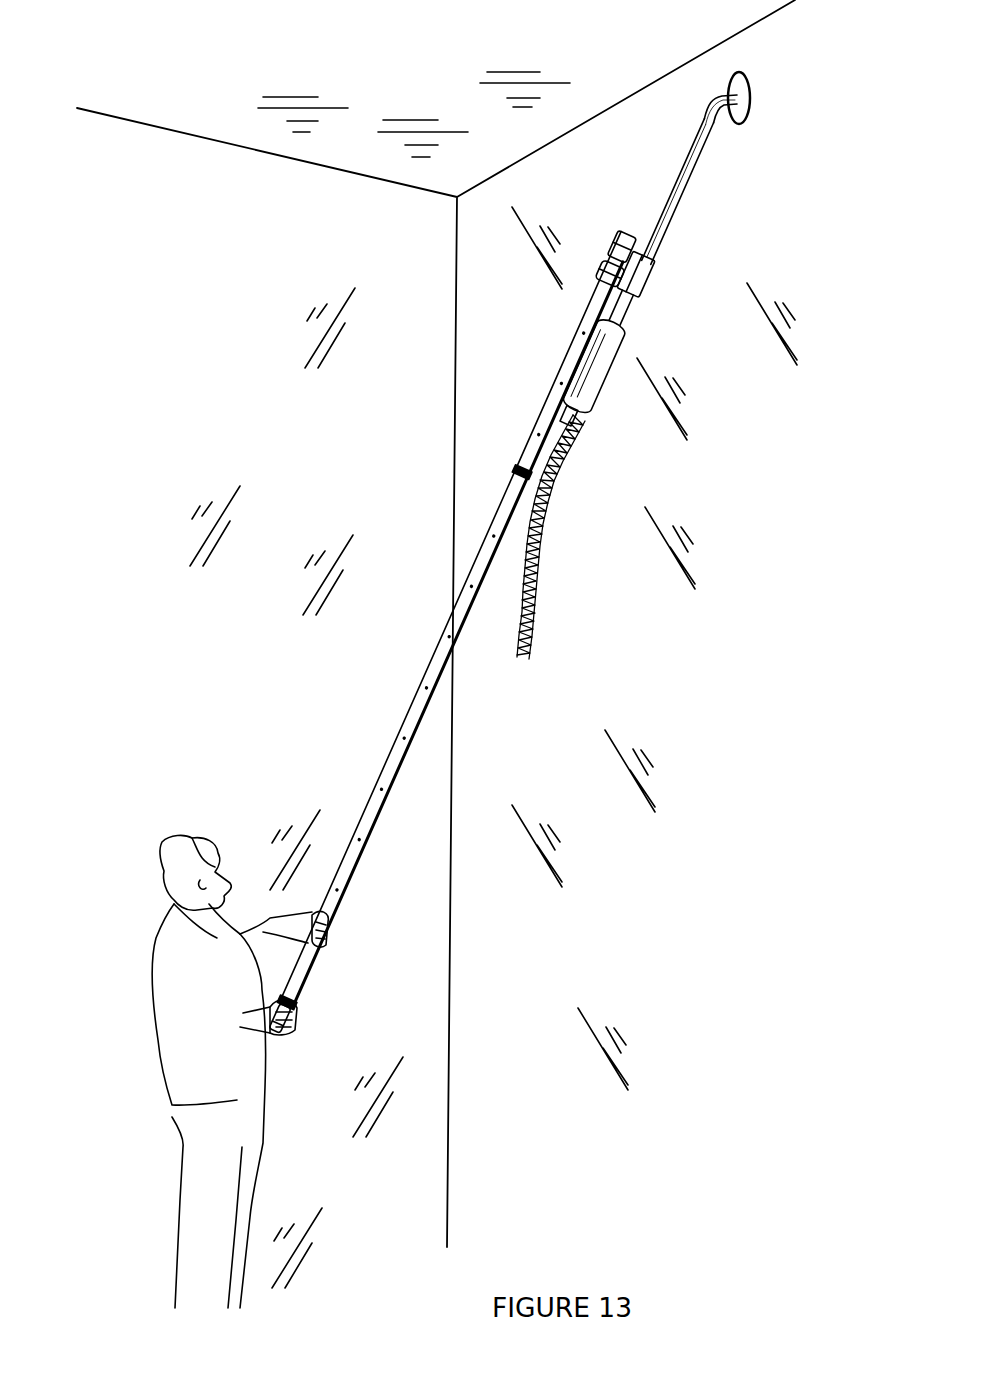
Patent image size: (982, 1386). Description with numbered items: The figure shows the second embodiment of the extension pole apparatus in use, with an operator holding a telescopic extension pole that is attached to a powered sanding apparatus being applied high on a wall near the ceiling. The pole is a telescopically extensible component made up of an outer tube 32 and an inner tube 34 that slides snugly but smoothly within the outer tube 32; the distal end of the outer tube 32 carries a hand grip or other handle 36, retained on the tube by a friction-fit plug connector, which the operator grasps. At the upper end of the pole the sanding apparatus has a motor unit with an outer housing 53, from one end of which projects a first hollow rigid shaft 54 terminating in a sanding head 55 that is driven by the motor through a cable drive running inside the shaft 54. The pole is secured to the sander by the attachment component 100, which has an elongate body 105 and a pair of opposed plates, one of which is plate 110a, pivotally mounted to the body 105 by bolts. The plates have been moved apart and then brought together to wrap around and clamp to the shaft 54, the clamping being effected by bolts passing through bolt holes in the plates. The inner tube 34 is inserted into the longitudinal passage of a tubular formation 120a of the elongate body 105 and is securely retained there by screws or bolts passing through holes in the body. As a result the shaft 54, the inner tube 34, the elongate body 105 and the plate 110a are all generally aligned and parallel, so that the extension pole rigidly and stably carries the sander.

The outer tube 32 is at (400, 728).
The inner tube 34 is at (557, 378).
The handle 36 is at (287, 1033).
The outer housing 53 is at (623, 342).
The first hollow rigid shaft 54 is at (675, 195).
The sanding head 55 is at (760, 85).
The attachment component 100 is at (615, 232).
The elongate body 105 is at (612, 248).
The plate 110a is at (640, 275).
The tubular formation 120a is at (615, 270).